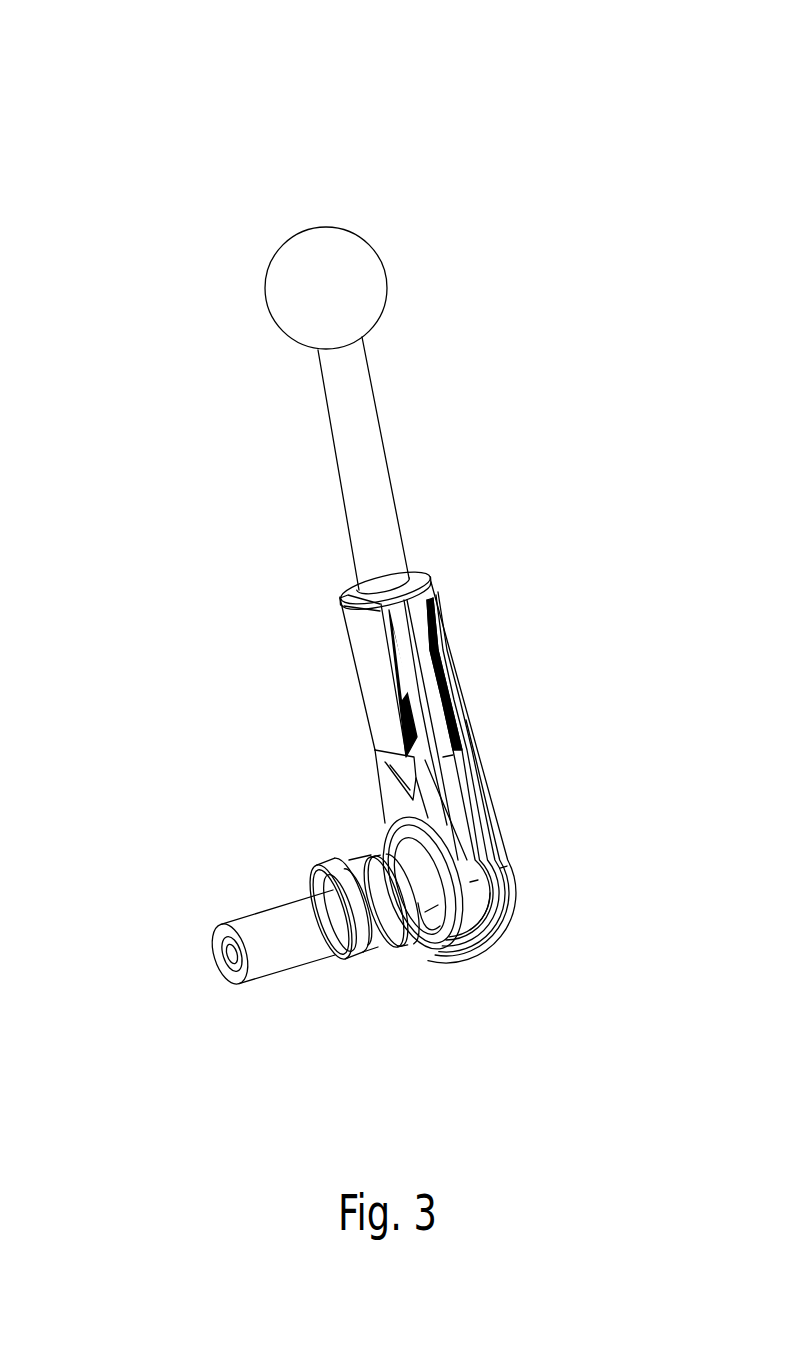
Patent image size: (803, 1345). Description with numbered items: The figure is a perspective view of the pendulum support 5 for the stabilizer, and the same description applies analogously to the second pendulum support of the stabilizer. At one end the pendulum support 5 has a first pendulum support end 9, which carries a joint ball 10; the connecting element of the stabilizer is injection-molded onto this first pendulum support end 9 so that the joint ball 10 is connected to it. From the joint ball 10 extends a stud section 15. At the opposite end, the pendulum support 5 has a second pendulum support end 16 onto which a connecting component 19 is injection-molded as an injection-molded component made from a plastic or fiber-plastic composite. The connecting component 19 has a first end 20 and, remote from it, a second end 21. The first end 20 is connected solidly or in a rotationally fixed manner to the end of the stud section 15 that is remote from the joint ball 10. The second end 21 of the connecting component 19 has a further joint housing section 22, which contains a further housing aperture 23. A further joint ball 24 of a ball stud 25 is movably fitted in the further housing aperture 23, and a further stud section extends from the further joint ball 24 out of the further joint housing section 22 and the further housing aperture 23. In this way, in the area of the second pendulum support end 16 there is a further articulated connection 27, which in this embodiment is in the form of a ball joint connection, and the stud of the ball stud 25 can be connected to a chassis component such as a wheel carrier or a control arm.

The pendulum support 5 is at (596, 127).
The first pendulum support end 9 is at (477, 263).
The joint ball 10 is at (318, 245).
The stud section 15 is at (372, 437).
The first end 20 is at (447, 595).
The connecting component 19 is at (478, 717).
The second pendulum support end 16 is at (565, 858).
The second end 21 is at (527, 905).
The further joint housing section 22 is at (487, 958).
The further articulated connection 27 is at (587, 1012).
The further housing aperture 23 is at (363, 835).
The further joint ball 24 is at (425, 922).
The ball stud 25 is at (175, 905).